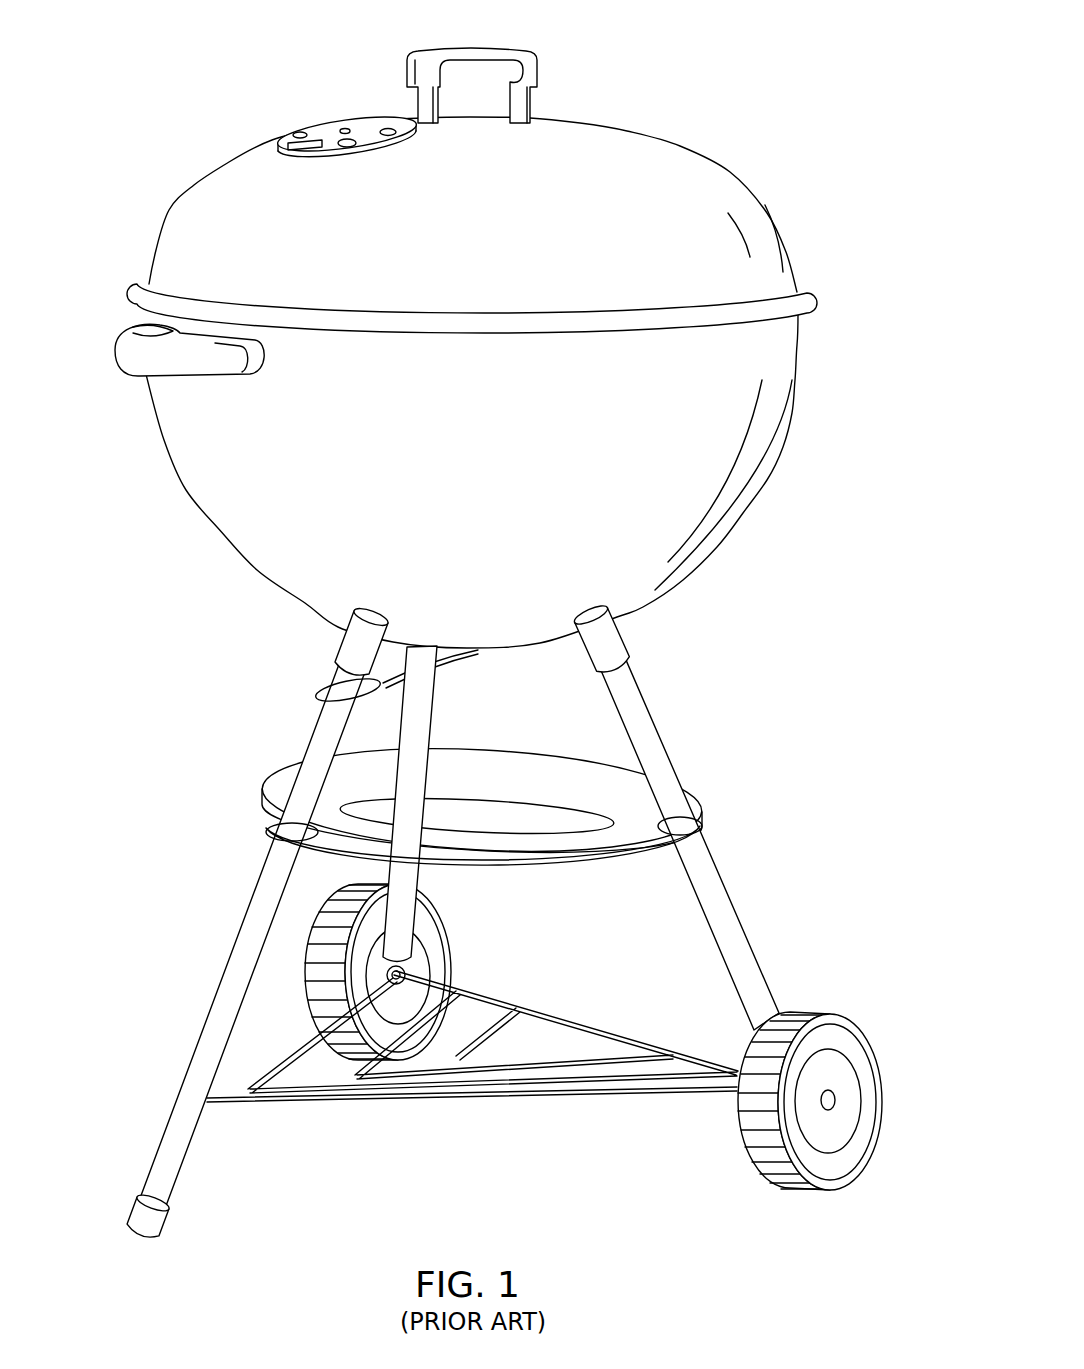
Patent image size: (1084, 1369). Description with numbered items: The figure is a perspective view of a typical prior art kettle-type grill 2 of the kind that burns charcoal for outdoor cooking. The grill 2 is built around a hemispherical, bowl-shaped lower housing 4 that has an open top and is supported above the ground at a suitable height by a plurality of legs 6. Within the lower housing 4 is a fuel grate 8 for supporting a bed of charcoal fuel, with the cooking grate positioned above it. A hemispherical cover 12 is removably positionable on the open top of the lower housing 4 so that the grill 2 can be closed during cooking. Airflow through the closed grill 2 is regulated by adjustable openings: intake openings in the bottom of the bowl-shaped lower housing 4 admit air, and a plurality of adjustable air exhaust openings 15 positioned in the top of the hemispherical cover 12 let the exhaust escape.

The kettle-type grill 2 is at (764, 50).
The lower housing 4 is at (253, 572).
The legs 6 is at (435, 705).
The fuel grate 8 is at (645, 133).
The hemispherical cover 12 is at (200, 180).
The adjustable air exhaust openings 15 is at (327, 130).